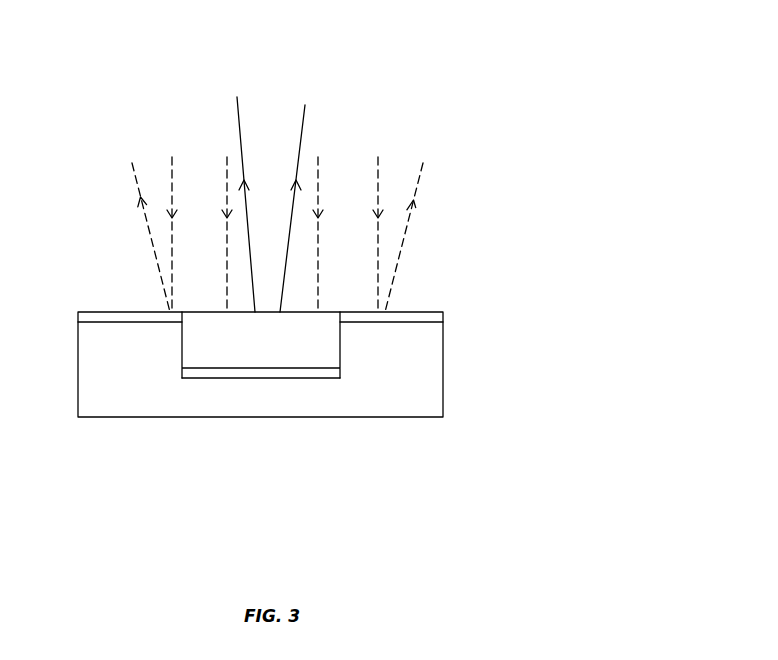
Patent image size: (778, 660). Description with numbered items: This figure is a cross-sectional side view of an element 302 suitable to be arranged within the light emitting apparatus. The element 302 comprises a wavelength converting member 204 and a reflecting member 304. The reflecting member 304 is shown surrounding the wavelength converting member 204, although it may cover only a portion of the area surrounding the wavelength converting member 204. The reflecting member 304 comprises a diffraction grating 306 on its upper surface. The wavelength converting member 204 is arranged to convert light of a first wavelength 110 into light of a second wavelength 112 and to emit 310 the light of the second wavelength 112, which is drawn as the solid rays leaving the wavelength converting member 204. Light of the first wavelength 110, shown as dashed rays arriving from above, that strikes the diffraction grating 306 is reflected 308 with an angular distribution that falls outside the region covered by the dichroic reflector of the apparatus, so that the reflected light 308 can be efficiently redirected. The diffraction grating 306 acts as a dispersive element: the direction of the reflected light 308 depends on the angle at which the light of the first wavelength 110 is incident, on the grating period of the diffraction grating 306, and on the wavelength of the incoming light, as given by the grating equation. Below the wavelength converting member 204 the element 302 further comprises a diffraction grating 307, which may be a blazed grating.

The element 302 is at (512, 237).
The reflecting member 304 is at (420, 382).
The diffraction grating 306 is at (90, 316).
The wavelength converting member 204 is at (323, 318).
The diffraction grating 307 is at (242, 373).
The emission of light of the second wavelength 310 is at (267, 138).
The light of the second wavelength 112 is at (303, 113).
The light of the first wavelength 110 is at (227, 197).
The reflected light 308 is at (148, 230).